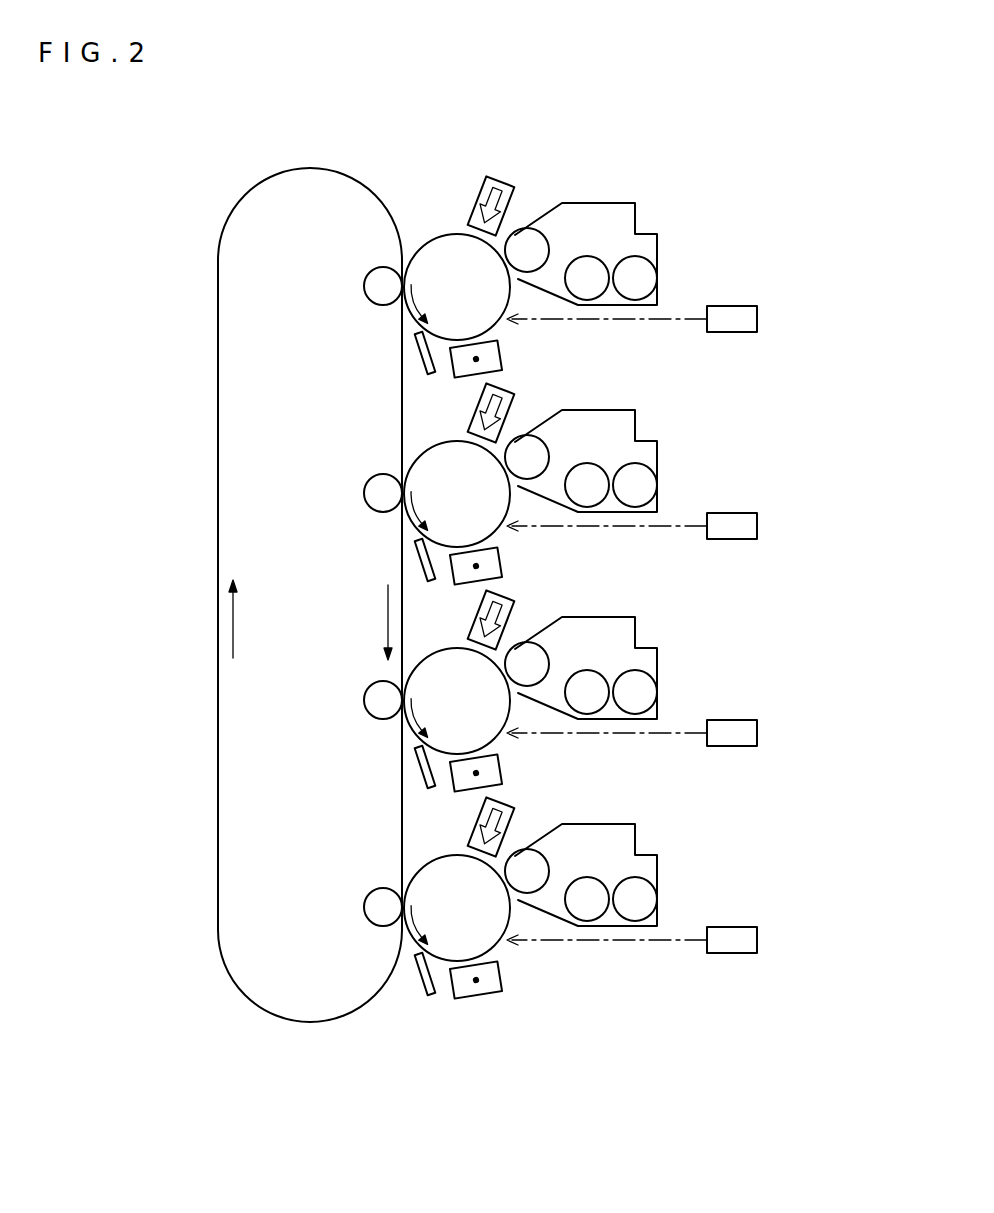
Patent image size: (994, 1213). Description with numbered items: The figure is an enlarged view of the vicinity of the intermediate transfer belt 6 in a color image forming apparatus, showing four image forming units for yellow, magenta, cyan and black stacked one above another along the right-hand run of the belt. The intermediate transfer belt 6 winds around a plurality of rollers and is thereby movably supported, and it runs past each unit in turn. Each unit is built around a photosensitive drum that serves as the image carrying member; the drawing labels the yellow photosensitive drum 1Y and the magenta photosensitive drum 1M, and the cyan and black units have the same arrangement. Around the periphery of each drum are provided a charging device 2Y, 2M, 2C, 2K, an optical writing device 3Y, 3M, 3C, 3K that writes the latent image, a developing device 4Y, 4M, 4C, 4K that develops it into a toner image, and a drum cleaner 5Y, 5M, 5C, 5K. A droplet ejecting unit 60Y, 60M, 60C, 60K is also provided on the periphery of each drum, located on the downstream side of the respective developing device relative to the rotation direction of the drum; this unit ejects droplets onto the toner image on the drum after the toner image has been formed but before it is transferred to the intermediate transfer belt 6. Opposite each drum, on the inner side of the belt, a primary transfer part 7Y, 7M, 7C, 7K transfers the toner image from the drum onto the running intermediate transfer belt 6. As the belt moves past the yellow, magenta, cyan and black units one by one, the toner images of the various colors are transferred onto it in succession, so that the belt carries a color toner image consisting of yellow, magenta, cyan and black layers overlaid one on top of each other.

The photosensitive drum 1Y is at (440, 232).
The photosensitive drum 1M is at (457, 466).
The charging device 2Y is at (500, 351).
The charging device 2M is at (509, 562).
The charging device 2C is at (507, 769).
The charging device 2K is at (507, 976).
The optical writing device 3Y is at (757, 319).
The optical writing device 3M is at (666, 522).
The optical writing device 3C is at (664, 729).
The optical writing device 3K is at (664, 936).
The developing device 4Y is at (657, 250).
The developing device 4M is at (615, 461).
The developing device 4C is at (613, 668).
The developing device 4K is at (613, 875).
The drum cleaner 5Y is at (418, 350).
The drum cleaner 5M is at (396, 560).
The drum cleaner 5C is at (398, 767).
The drum cleaner 5K is at (391, 974).
The intermediate transfer belt 6 is at (218, 533).
The primary transfer part 7Y is at (364, 286).
The primary transfer part 7M is at (352, 491).
The primary transfer part 7C is at (354, 698).
The primary transfer part 7K is at (354, 905).
The droplet ejecting unit 60Y is at (513, 187).
The droplet ejecting unit 60M is at (533, 411).
The droplet ejecting unit 60C is at (531, 618).
The droplet ejecting unit 60K is at (531, 825).